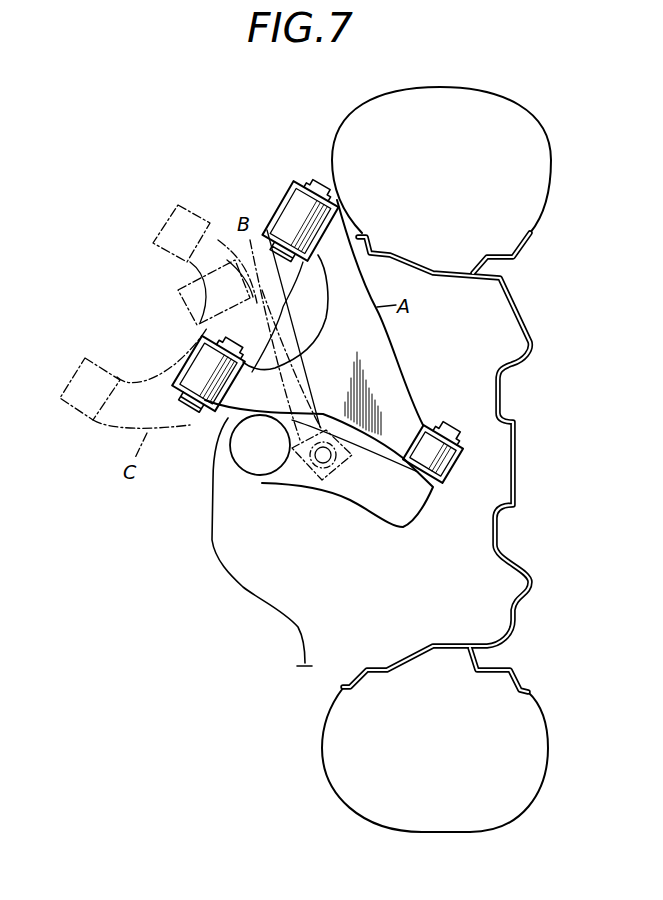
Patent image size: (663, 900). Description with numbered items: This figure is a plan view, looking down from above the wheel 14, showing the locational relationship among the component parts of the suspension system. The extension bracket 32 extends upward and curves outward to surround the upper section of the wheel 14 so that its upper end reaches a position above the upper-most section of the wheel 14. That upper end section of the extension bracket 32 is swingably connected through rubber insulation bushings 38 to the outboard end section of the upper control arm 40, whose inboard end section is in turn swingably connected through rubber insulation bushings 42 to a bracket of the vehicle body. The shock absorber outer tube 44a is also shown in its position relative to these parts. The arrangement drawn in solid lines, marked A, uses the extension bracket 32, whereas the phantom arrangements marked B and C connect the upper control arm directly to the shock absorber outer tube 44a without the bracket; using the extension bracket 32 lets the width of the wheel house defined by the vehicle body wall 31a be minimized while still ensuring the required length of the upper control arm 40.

The wheel 14 is at (537, 163).
The rubber insulation bushings 42 is at (292, 210).
The upper control arm 40 is at (377, 358).
The rubber insulation bushings 38 is at (460, 447).
The extension bracket 32 is at (348, 493).
The shock absorber outer tube 44a is at (242, 475).
The vehicle body wall 31a is at (222, 562).